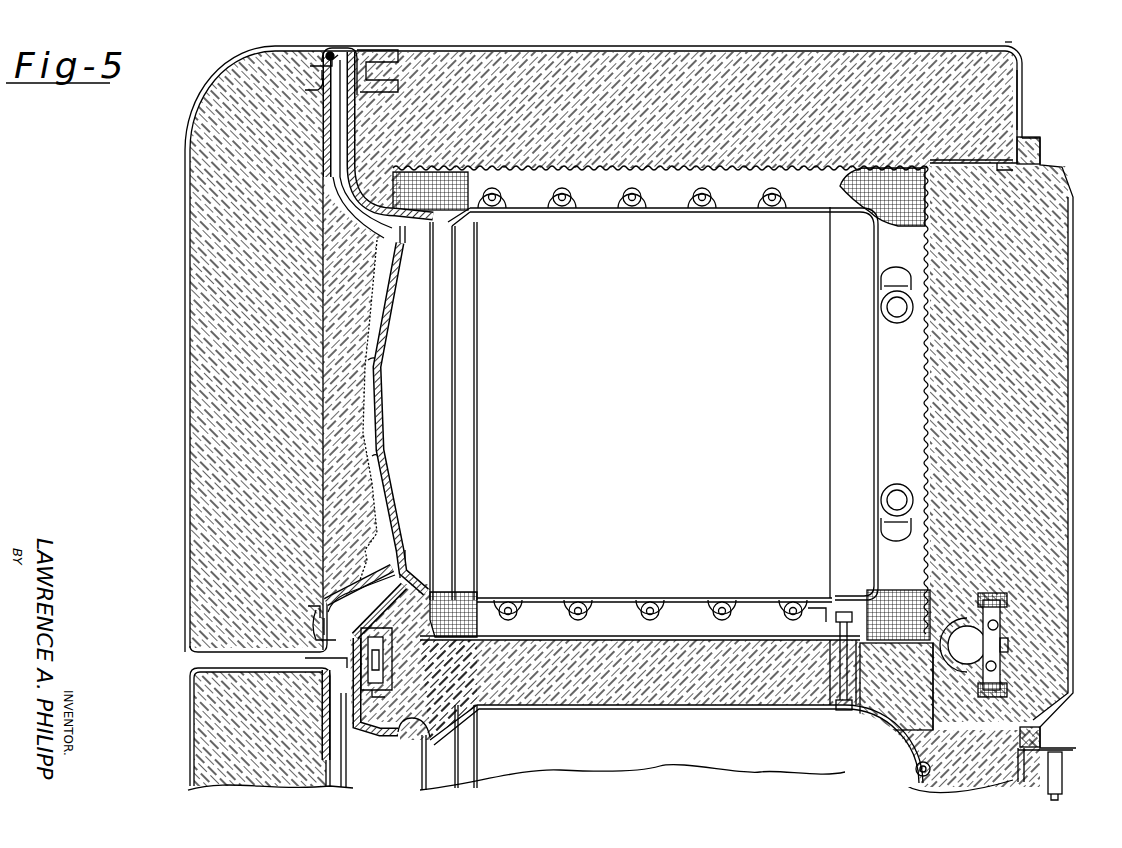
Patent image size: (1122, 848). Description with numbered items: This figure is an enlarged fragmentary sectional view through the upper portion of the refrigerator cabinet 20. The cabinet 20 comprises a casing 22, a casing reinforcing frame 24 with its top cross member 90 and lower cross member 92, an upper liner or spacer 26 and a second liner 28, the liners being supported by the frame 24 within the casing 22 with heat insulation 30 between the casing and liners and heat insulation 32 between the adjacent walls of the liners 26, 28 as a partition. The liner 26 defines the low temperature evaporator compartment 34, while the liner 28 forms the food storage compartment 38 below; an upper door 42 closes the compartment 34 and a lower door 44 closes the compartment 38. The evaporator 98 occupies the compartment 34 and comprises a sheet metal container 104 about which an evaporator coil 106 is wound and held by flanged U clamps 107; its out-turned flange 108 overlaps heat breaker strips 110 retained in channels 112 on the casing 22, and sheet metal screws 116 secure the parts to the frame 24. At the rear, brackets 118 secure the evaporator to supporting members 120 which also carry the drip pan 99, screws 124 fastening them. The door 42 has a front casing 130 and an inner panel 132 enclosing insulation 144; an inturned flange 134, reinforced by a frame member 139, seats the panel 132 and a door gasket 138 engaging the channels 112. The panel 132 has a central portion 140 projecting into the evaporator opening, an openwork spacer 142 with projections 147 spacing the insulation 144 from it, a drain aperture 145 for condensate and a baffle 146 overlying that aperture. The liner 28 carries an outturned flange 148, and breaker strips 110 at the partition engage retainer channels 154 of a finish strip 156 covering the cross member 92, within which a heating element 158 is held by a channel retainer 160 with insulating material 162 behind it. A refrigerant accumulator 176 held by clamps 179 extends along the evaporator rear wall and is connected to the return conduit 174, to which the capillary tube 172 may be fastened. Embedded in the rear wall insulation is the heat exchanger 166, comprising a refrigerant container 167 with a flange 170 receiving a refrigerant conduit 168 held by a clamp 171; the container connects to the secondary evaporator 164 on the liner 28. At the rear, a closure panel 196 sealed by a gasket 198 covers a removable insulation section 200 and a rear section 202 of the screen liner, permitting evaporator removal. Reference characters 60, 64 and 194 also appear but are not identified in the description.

The cabinet 20 is at (1013, 48).
The casing 22 is at (501, 50).
The casing reinforcing frame 24 is at (392, 86).
The liner or spacer 26 is at (572, 205).
The second liner or shell 28 is at (762, 706).
The heat insulation 30 is at (725, 60).
The heat insulation 32 is at (650, 695).
The evaporator compartment 34 is at (665, 200).
The food storage compartment 38 is at (656, 766).
The upper door 42 is at (205, 110).
The lower door 44 is at (190, 748).
The top panel 60 is at (658, 52).
The rear top corner 64 is at (1024, 82).
The top cross member 90 is at (384, 48).
The lower cross member 92 is at (382, 676).
The evaporator 98 is at (905, 582).
The pan 99 is at (540, 612).
The sheet metal container 104 is at (612, 212).
The evaporator coil 106 is at (498, 208).
The flanged U clamps 107 is at (498, 193).
The out-turned flange 108 is at (430, 190).
The heat breaker strips 110 is at (344, 135).
The channels 112 is at (344, 48).
The sheet metal screws 116 is at (366, 673).
The brackets 118 is at (812, 612).
The supporting members 120 is at (832, 669).
The screws 124 is at (846, 610).
The front casing 130 is at (188, 182).
The inner panel 132 is at (322, 148).
The inturned flange 134 is at (316, 66).
The door gasket 138 is at (331, 50).
The frame member 139 is at (308, 90).
The central portion 140 is at (416, 402).
The openwork spacer 142 is at (366, 408).
The heat insulation 144 is at (205, 288).
The drain aperture 145 is at (359, 585).
The baffle 146 is at (352, 574).
The projections 147 is at (380, 363).
The outturned flange 148 is at (430, 735).
The retainer channels 154 is at (360, 660).
The finish strip 156 is at (386, 692).
The heating element 158 is at (384, 656).
The channel retainer 160 is at (386, 638).
The insulating material 162 is at (395, 664).
The refrigerant evaporator 164 is at (916, 768).
The heat exchanger 166 is at (1000, 680).
The refrigerant container 167 is at (965, 652).
The refrigerant conduit 168 is at (1001, 626).
The flange 170 is at (990, 592).
The clamp 171 is at (1010, 645).
The capillary tube 172 is at (1065, 760).
The return conduit 174 is at (1058, 786).
The refrigerant accumulator 176 is at (890, 314).
The clamps 179 is at (888, 284).
The flange 194 is at (1008, 172).
The closure panel 196 is at (1072, 443).
The gasket 198 is at (1041, 153).
The section of cabinet insulation 200 is at (1055, 262).
The rear section of screen liner 202 is at (925, 380).